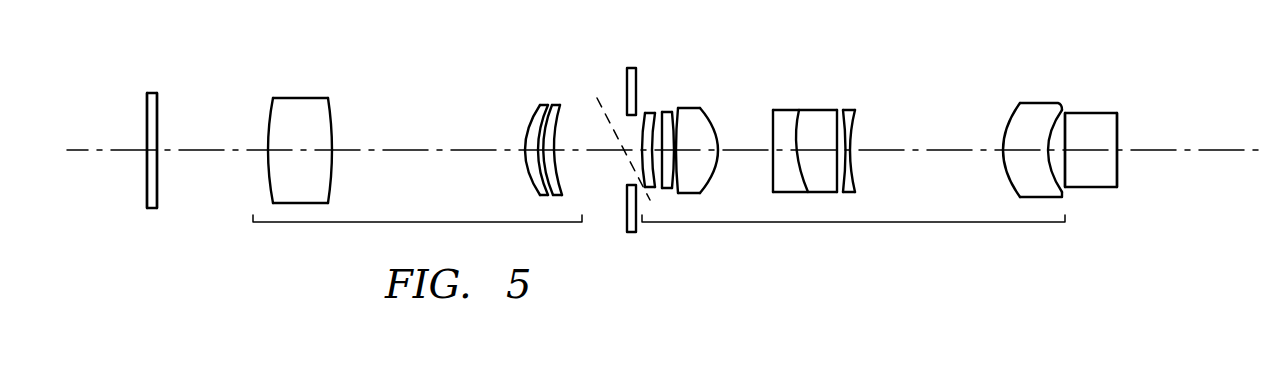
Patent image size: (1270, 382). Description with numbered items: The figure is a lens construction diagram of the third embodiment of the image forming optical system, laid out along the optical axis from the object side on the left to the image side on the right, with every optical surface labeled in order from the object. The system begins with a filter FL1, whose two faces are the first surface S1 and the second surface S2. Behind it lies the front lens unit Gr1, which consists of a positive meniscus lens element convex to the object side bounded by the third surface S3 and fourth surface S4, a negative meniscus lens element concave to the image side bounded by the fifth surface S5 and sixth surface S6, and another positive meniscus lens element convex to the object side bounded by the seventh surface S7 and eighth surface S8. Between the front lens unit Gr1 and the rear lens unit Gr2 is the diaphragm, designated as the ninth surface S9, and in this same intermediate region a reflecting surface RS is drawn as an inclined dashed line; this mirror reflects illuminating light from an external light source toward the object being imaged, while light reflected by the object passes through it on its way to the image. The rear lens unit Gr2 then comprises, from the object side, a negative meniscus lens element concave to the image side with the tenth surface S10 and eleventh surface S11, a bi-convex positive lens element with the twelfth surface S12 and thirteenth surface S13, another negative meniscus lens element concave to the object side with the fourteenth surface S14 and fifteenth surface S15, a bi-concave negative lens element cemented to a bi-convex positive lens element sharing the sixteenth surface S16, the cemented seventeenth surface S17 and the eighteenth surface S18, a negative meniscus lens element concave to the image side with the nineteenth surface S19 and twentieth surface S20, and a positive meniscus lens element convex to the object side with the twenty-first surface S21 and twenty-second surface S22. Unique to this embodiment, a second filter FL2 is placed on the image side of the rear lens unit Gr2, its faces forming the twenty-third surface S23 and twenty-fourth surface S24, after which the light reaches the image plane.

The first surface S1 is at (145, 100).
The second surface S2 is at (158, 102).
The third surface S3 is at (268, 108).
The fourth surface S4 is at (332, 110).
The fifth surface S5 is at (533, 113).
The sixth surface S6 is at (545, 113).
The seventh surface S7 is at (536, 136).
The eighth surface S8 is at (565, 115).
The ninth surface S9 is at (632, 67).
The tenth surface S10 is at (647, 112).
The eleventh surface S11 is at (655, 113).
The twelfth surface S12 is at (674, 160).
The thirteenth surface S13 is at (674, 146).
The fourteenth surface S14 is at (679, 145).
The fifteenth surface S15 is at (702, 108).
The sixteenth surface S16 is at (768, 110).
The seventeenth surface S17 is at (798, 110).
The eighteenth surface S18 is at (833, 110).
The nineteenth surface S19 is at (847, 110).
The twentieth surface S20 is at (854, 130).
The twenty-first surface S21 is at (1008, 118).
The twenty-second surface S22 is at (1049, 115).
The twenty-third surface S23 is at (1066, 127).
The twenty-fourth surface S24 is at (1118, 133).
The filter FL1 is at (150, 208).
The filter FL2 is at (1092, 190).
The reflecting surface RS is at (612, 118).
The front lens unit Gr1 is at (417, 240).
The rear lens unit Gr2 is at (853, 241).